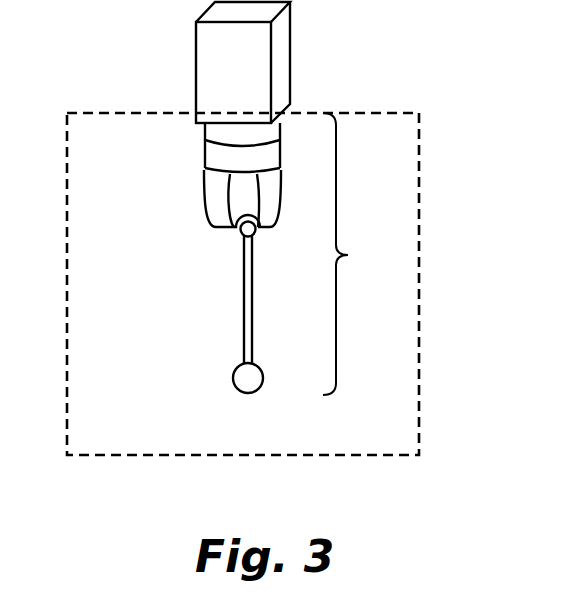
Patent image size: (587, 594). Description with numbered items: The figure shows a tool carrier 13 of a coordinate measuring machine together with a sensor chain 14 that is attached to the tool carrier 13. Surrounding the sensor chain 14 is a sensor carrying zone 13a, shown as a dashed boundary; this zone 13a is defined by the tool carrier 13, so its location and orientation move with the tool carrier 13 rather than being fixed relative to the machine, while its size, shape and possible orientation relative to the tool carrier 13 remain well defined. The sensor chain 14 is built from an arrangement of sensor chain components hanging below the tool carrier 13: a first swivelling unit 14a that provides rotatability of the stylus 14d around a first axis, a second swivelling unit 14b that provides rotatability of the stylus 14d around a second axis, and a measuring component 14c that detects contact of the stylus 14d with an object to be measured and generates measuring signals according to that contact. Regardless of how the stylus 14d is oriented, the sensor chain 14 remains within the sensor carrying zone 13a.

The tool carrier 13 is at (203, 73).
The sensor carrying zone 13a is at (146, 441).
The sensor chain 14 is at (355, 254).
The first swivelling unit 14a is at (215, 135).
The second swivelling unit 14b is at (212, 203).
The measuring component 14c is at (240, 233).
The stylus 14d is at (249, 333).